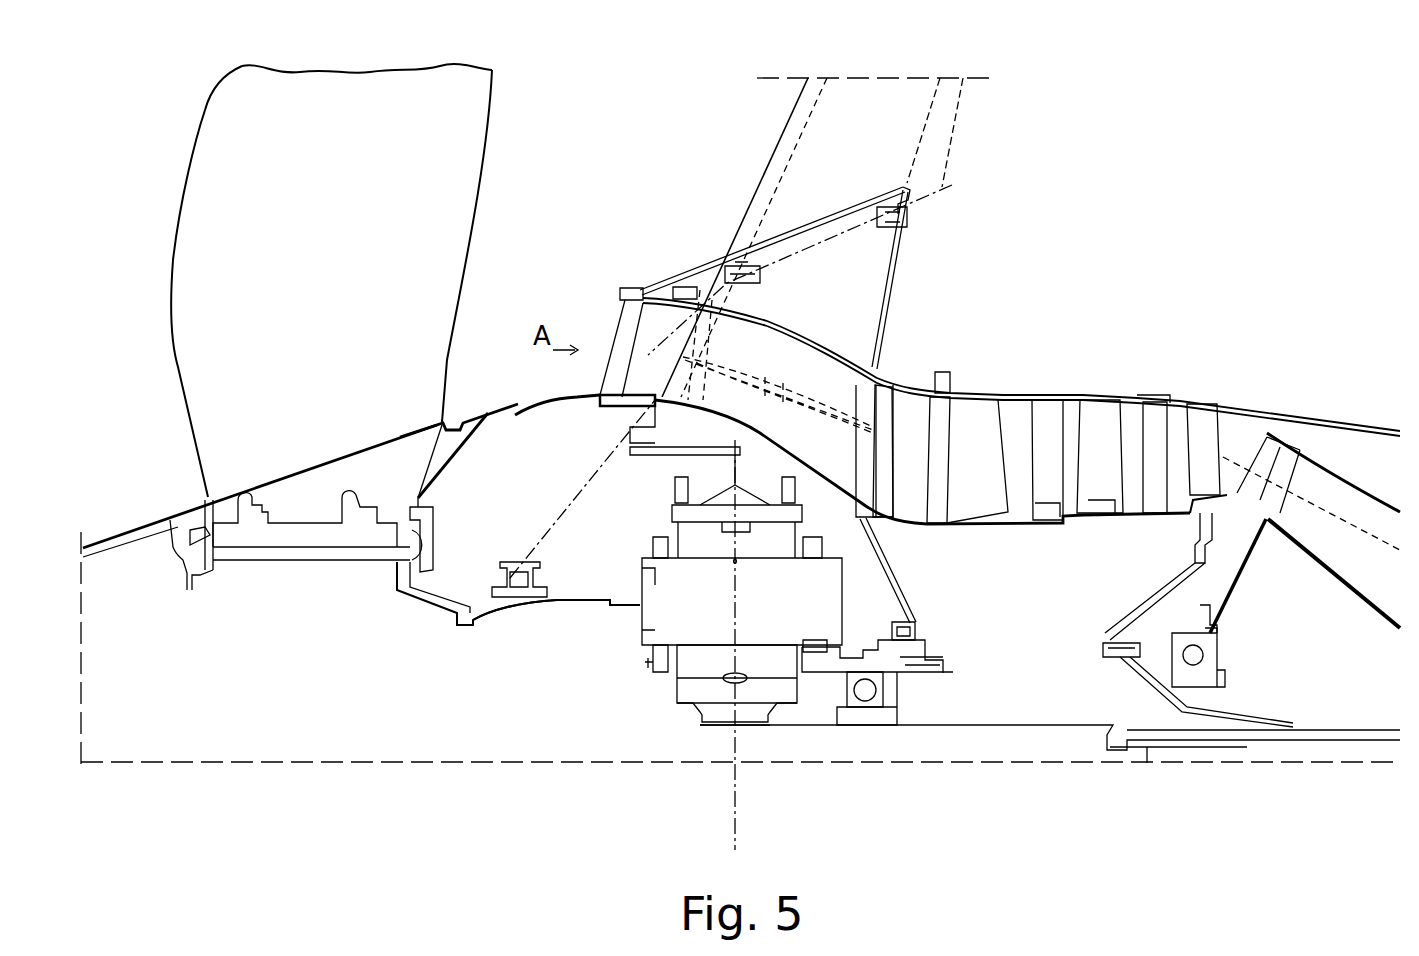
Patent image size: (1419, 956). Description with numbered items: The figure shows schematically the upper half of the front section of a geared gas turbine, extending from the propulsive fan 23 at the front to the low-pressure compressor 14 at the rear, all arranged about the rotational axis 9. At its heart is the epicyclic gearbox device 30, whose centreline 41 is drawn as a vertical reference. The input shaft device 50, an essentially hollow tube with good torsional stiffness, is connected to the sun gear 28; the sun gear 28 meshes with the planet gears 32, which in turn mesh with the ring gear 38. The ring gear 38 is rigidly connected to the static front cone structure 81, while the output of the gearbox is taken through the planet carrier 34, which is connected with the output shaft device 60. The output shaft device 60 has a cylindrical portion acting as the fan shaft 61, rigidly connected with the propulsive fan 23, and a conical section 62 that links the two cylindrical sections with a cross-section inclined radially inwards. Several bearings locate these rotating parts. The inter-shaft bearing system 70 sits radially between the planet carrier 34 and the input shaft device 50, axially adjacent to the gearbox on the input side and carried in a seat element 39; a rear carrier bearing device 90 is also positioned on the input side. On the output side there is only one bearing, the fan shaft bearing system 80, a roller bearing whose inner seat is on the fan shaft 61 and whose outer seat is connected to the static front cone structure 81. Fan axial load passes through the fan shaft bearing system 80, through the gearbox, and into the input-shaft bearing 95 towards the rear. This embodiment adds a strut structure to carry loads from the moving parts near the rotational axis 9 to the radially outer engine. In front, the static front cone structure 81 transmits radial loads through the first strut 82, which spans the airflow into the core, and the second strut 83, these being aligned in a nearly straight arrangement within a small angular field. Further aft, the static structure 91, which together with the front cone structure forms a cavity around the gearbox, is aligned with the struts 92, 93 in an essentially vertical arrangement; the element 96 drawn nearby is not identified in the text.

The rotational axis 9 is at (1353, 763).
The low-pressure compressor 14 is at (1105, 415).
The propulsive fan 23 is at (470, 120).
The sun gear 28 is at (688, 695).
The epicyclic gearbox device 30 is at (643, 672).
The planet gears 32 is at (793, 577).
The planet carrier 34 is at (650, 620).
The ring gear 38 is at (748, 490).
The seat element 39 is at (850, 653).
The centreline 41 is at (730, 828).
The input shaft device 50 is at (773, 727).
The output shaft device 60 is at (552, 632).
The fan shaft 61 is at (232, 553).
The conical section 62 is at (563, 603).
The inter-shaft bearing system 70 is at (863, 693).
The fan shaft bearing system 80 is at (518, 573).
The static front cone structure 81 is at (600, 468).
The first strut 82 is at (717, 333).
The second strut 83 is at (800, 127).
The rear carrier bearing device 90 is at (915, 632).
The static structure 91 is at (887, 562).
The strut 92 is at (897, 260).
The strut 93 is at (948, 110).
The input-shaft bearing 95 is at (1207, 648).
The support arm 96 is at (1253, 562).